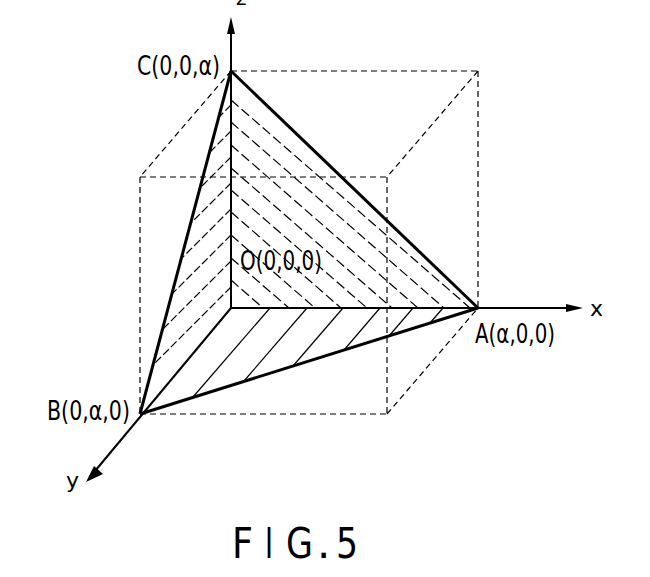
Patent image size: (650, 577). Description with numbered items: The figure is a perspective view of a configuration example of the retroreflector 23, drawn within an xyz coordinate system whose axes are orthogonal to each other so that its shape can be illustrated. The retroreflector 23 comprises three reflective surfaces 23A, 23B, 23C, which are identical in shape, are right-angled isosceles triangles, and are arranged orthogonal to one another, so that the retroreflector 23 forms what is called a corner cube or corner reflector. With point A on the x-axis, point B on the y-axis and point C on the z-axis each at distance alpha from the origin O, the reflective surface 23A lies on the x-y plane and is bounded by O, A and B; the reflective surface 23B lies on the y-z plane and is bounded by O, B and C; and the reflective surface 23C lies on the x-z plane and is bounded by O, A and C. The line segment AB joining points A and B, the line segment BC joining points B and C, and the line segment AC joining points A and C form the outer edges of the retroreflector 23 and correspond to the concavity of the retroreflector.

The retroreflector 23 is at (305, 242).
The reflective surface 23A is at (280, 355).
The reflective surface 23B is at (200, 278).
The reflective surface 23C is at (278, 143).
The line segment AB is at (353, 355).
The line segment AC is at (393, 230).
The line segment BC is at (162, 332).